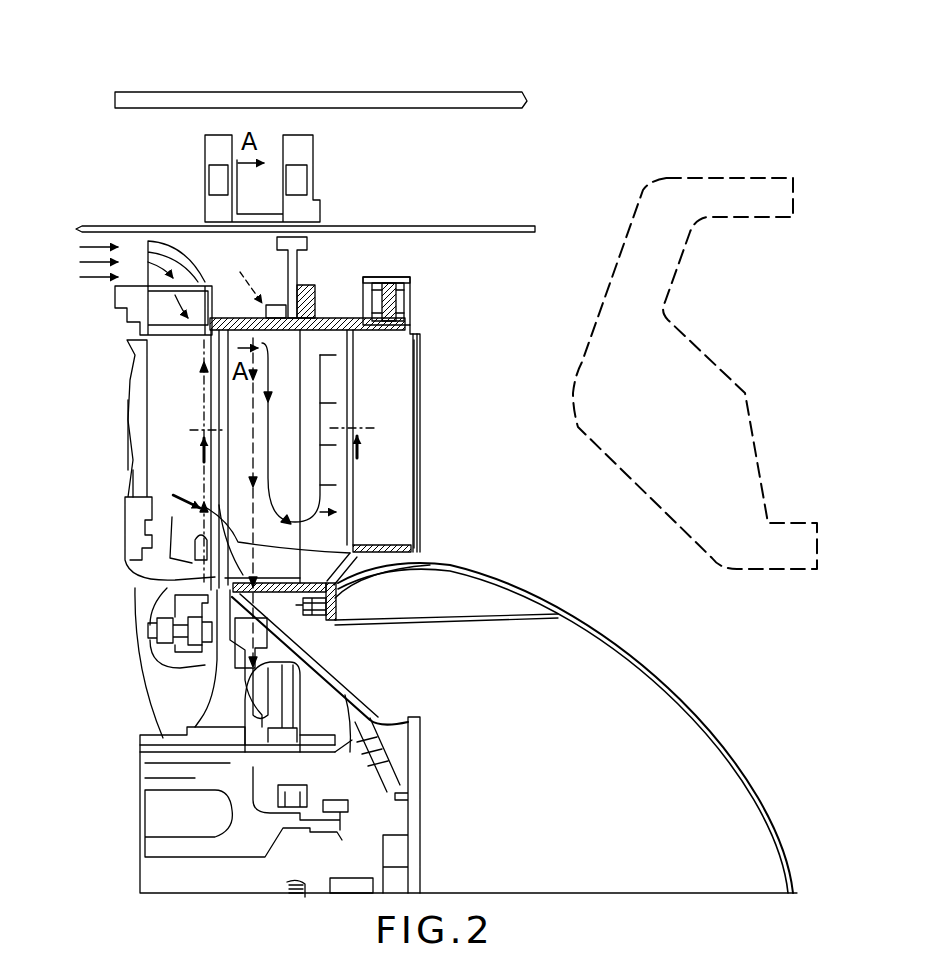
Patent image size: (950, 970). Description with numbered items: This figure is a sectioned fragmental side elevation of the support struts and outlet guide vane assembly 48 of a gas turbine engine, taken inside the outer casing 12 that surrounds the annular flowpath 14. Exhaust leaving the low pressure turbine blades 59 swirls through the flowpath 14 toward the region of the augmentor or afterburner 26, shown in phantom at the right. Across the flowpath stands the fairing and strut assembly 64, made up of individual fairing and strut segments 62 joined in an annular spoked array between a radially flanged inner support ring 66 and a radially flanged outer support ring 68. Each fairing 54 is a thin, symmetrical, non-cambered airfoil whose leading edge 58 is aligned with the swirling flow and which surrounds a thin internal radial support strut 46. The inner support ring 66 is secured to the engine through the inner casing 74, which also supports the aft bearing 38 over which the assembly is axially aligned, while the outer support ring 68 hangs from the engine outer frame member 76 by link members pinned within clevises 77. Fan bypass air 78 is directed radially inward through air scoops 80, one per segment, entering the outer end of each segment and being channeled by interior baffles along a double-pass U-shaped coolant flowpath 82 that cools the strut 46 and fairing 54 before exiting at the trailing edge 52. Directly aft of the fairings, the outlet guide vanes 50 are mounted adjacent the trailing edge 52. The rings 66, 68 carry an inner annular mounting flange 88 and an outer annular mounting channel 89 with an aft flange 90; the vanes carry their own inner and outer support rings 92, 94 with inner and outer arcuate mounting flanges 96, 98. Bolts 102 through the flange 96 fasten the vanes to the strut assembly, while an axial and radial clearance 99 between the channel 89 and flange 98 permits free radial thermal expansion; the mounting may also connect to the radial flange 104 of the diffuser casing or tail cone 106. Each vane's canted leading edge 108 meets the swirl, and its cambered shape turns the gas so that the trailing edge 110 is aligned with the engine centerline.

The outer casing 12 is at (442, 70).
The annular flowpath 14 is at (186, 372).
The augmentor or afterburner 26 is at (750, 404).
The aft bearing 38 is at (312, 802).
The internal radial support strut 46 is at (316, 308).
The outlet guide vane assembly 48 is at (430, 488).
The outlet guide vanes 50 is at (392, 428).
The trailing edge 52 is at (364, 474).
The fairing 54 is at (300, 392).
The leading edge 58 is at (237, 388).
The low pressure turbine blades 59 is at (138, 462).
The fairing and strut segments 62 is at (216, 479).
The fairing and strut assembly 64 is at (258, 285).
The inner support ring 66 is at (262, 603).
The outer support ring 68 is at (277, 318).
The inner casing 74 is at (205, 643).
The outer frame member 76 is at (383, 224).
The clevises 77 is at (308, 248).
The fan bypass air 78 is at (88, 270).
The air scoops 80 is at (145, 252).
The coolant flowpath 82 is at (322, 428).
The inner annular mounting flange 88 is at (312, 608).
The outer annular mounting channel 89 is at (370, 280).
The aft flange 90 is at (400, 297).
The inner support ring 92 is at (413, 540).
The outer support ring 94 is at (412, 333).
The inner arcuate mounting flange 96 is at (340, 612).
The outer arcuate mounting flange 98 is at (393, 283).
The axial and radial clearance 99 is at (385, 307).
The bolts 102 is at (352, 590).
The radial flange 104 is at (340, 625).
The diffuser casing or tail cone 106 is at (510, 584).
The leading edge 108 is at (418, 388).
The trailing edge 110 is at (355, 518).